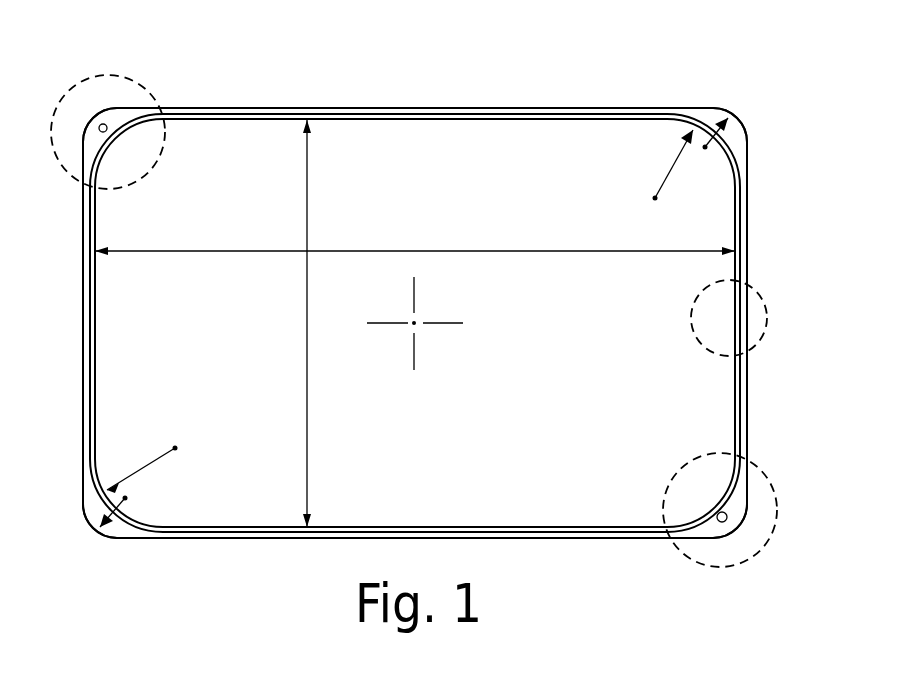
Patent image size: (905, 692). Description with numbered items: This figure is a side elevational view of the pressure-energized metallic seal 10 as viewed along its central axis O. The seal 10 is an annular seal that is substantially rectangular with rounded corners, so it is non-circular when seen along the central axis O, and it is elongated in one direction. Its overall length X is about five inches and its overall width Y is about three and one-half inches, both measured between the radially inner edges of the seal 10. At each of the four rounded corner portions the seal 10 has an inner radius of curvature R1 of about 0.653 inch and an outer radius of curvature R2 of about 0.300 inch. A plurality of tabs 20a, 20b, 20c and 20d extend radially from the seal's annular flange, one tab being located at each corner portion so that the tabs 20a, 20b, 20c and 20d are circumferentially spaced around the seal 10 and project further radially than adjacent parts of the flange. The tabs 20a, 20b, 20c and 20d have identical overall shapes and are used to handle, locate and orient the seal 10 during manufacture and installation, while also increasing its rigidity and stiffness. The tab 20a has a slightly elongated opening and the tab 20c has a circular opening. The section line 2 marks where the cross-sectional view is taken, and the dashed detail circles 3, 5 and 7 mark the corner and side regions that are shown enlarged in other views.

The metallic seal 10 is at (575, 98).
The tab 20a is at (743, 507).
The tab 20b is at (737, 138).
The tab 20c is at (130, 112).
The tab 20d is at (112, 537).
The detail region of Fig. 3 is at (733, 567).
The detail region of Fig. 5 is at (76, 80).
The detail region of Fig. 7 is at (763, 335).
The section line 2- 2 is at (70, 320).
The overall length X is at (562, 252).
The overall width Y is at (307, 388).
The central axis O is at (414, 323).
The inner radius of curvature R1 is at (135, 472).
The outer radius of curvature R2 is at (715, 153).